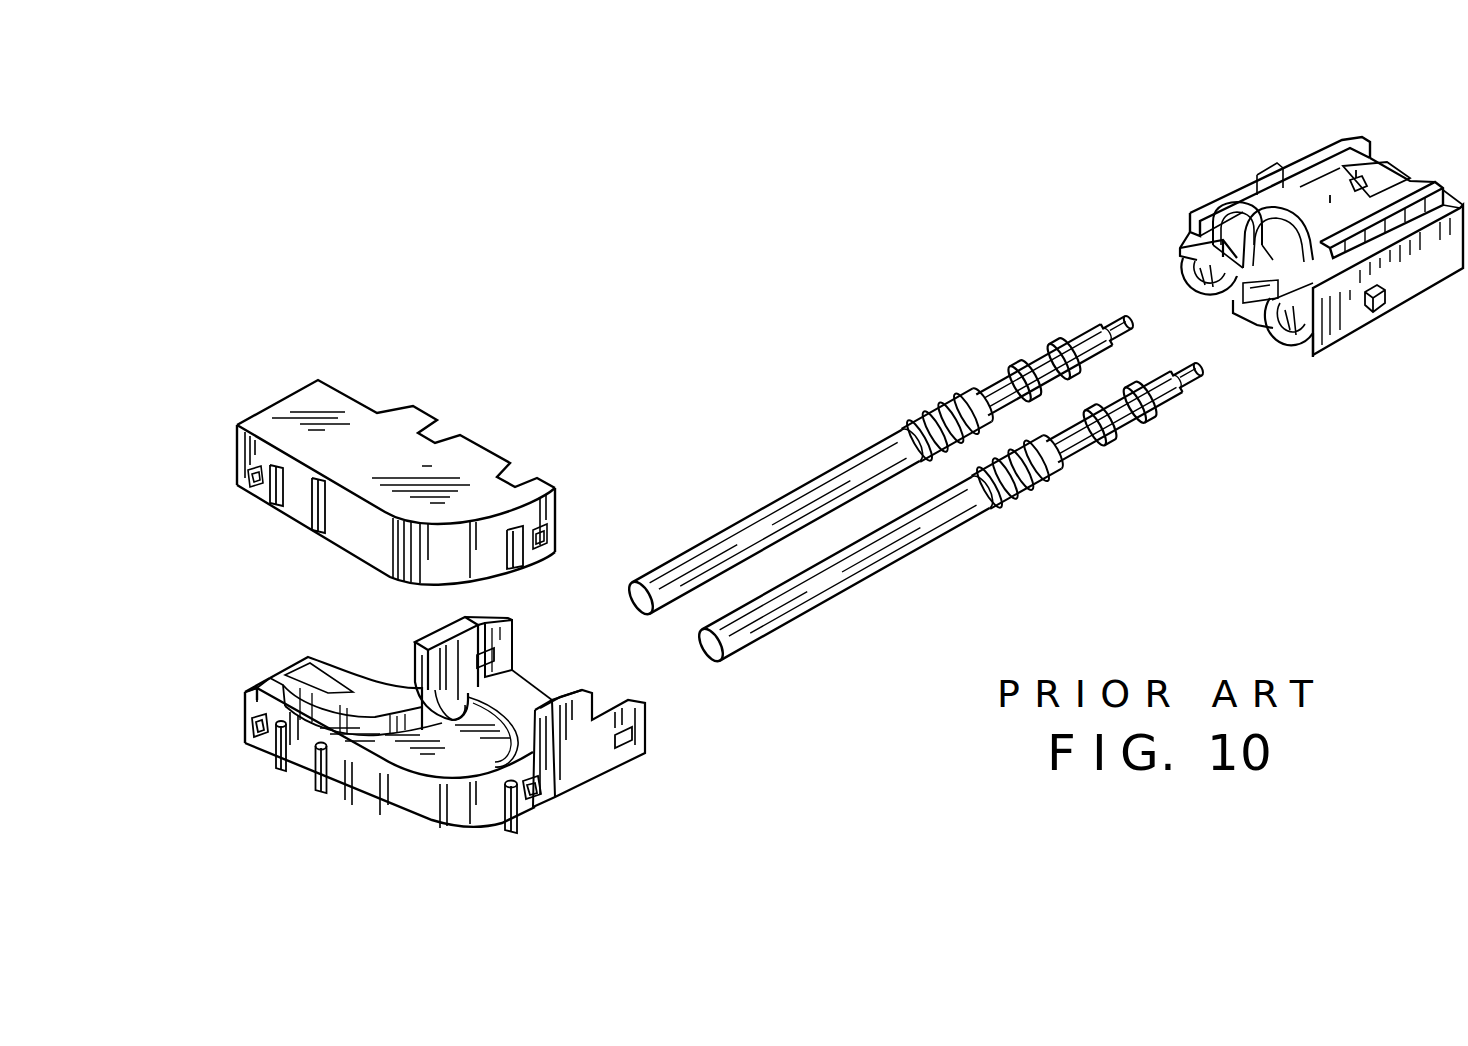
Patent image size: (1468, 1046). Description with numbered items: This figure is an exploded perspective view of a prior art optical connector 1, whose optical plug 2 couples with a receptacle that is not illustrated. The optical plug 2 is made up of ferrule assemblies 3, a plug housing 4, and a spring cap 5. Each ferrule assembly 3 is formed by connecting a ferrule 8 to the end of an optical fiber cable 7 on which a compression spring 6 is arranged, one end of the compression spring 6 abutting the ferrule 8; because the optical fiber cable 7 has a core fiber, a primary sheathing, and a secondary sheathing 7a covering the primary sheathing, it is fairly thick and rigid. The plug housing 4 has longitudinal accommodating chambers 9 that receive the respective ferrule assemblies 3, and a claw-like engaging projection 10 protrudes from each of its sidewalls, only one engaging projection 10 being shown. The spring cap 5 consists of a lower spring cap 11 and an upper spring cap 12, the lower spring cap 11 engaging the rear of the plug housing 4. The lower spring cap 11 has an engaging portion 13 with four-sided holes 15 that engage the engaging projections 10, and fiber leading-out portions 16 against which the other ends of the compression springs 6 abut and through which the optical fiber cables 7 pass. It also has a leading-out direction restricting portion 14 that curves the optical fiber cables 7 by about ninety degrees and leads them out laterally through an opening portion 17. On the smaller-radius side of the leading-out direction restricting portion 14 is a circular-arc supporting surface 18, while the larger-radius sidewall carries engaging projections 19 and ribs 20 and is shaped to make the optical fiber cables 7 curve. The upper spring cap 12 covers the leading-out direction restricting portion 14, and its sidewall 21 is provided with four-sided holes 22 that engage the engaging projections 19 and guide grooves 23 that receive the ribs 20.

The optical connector 1 is at (508, 339).
The optical plug 2 is at (941, 313).
The ferrule assembly 3 is at (827, 459).
The plug housing 4 is at (1268, 153).
The spring cap 5 is at (171, 465).
The compression spring 6 is at (938, 406).
The optical fiber cable 7 is at (717, 545).
The secondary sheathing 7a is at (786, 513).
The ferrule 8 is at (1024, 350).
The accommodating chamber 9 is at (1188, 270).
The engaging projection 10 is at (1377, 308).
The lower spring cap 11 is at (252, 660).
The upper spring cap 12 is at (237, 502).
The engaging portion 13 is at (619, 767).
The leading-out direction restricting portion 14 is at (460, 831).
The four-sided hole 15 is at (496, 650).
The fiber leading-out portion 16 is at (432, 706).
The opening portion 17 is at (262, 688).
The supporting surface 18 is at (307, 670).
The engaging projection 19 is at (255, 733).
The rib 20 is at (287, 778).
The sidewall 21 is at (370, 532).
The four-sided hole 22 is at (542, 530).
The guide groove 23 is at (322, 477).